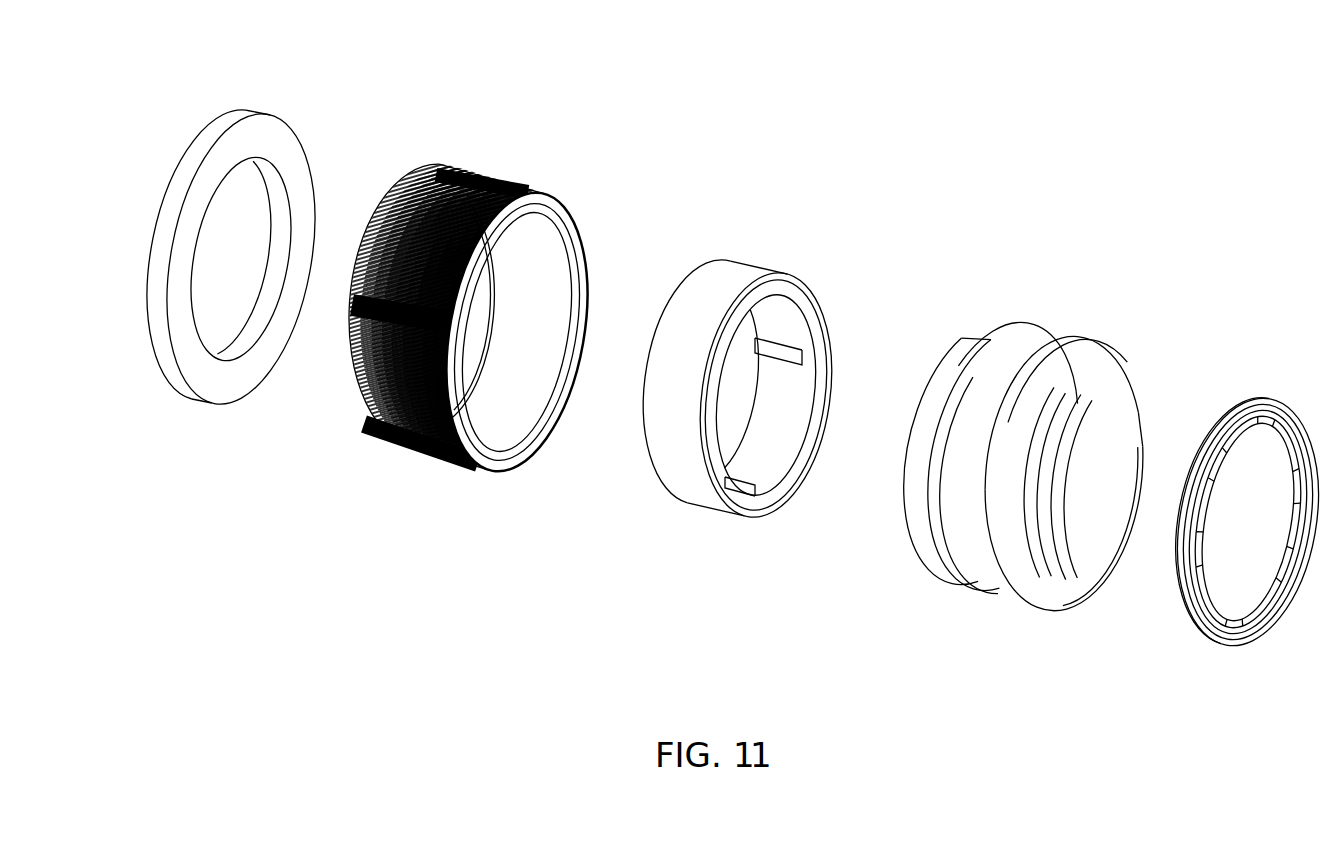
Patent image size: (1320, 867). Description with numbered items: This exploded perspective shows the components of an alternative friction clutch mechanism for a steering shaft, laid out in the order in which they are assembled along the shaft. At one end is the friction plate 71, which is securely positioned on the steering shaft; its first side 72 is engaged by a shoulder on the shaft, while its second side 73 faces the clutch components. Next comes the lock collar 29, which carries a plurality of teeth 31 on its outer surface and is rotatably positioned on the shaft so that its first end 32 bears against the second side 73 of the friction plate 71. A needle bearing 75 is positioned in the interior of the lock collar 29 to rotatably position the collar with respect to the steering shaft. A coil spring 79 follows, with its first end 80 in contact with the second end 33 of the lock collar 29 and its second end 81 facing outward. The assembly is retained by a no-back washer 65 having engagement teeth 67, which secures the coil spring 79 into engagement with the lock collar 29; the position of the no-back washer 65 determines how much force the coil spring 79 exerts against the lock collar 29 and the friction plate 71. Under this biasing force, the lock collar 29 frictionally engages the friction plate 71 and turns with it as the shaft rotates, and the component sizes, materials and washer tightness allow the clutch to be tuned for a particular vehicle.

The lock collar 29 is at (503, 178).
The teeth 31 is at (408, 455).
The first end 32 is at (441, 165).
The second end 33 is at (503, 463).
The no-back washer 65 is at (1273, 398).
The engagement teeth 67 is at (1232, 612).
The friction plate 71 is at (299, 130).
The first side 72 is at (202, 138).
The second side 73 is at (225, 403).
The needle bearing 75 is at (771, 270).
The coil spring 79 is at (1045, 330).
The first end 80 is at (940, 367).
The second end 81 is at (1072, 612).